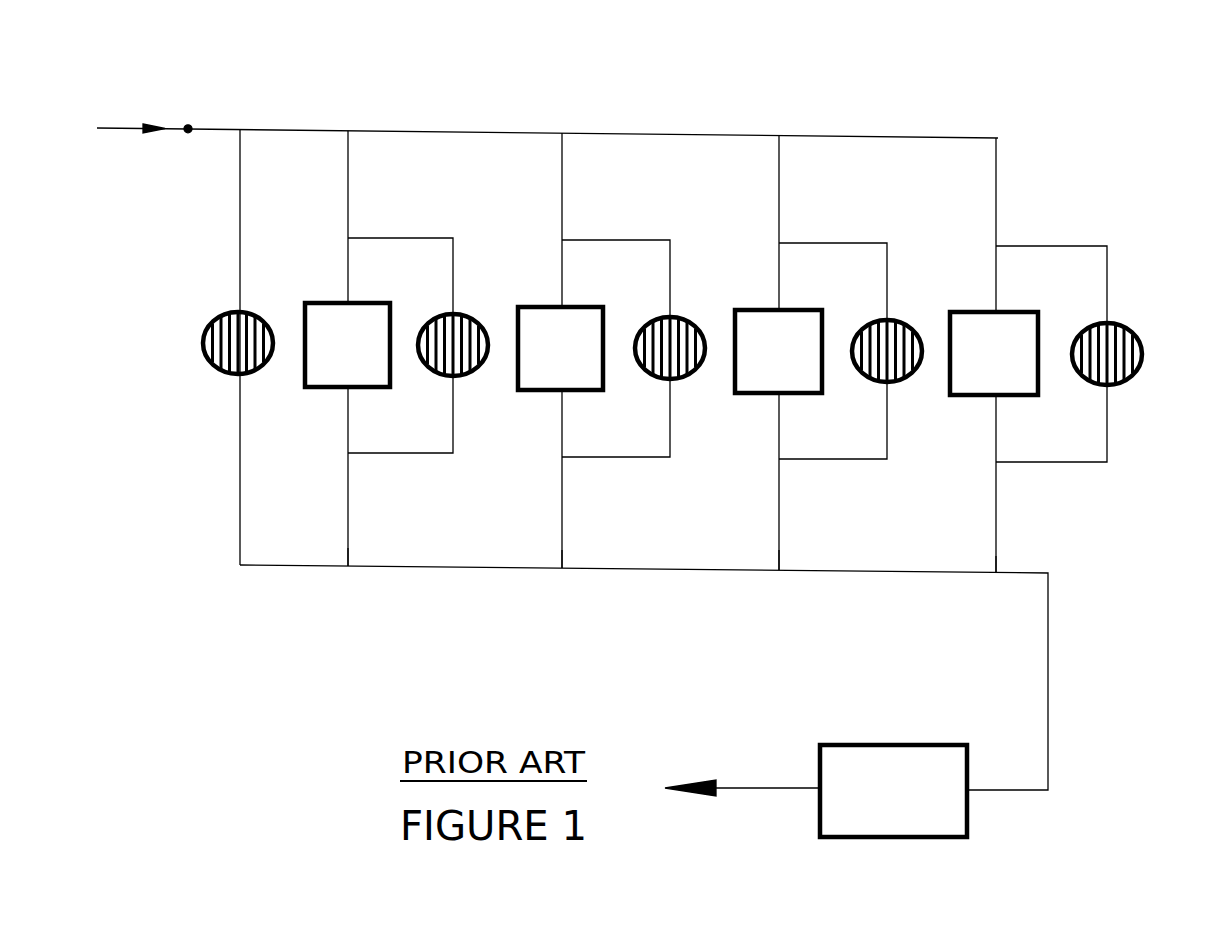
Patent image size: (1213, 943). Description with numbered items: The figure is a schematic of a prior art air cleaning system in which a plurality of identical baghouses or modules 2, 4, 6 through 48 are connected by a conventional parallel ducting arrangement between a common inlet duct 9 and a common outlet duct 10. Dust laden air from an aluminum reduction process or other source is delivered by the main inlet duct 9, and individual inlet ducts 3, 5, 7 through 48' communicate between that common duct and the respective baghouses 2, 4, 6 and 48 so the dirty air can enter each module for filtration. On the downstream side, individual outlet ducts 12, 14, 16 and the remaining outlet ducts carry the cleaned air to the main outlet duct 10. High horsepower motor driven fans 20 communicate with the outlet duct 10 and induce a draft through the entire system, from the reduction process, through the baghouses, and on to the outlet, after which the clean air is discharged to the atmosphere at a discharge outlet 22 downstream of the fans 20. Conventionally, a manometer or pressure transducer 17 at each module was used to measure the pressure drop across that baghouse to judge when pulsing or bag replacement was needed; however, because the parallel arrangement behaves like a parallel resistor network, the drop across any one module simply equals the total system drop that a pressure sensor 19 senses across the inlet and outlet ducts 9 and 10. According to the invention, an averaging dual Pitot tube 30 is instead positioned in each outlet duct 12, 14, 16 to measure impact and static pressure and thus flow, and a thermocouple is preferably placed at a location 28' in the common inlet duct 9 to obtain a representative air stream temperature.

The thermocouple location 28' is at (188, 77).
The common inlet duct 9 is at (868, 137).
The pressure sensor 19 is at (206, 324).
The common outlet duct 10 is at (680, 572).
The individual inlet duct 3 is at (348, 238).
The individual inlet duct 5 is at (562, 240).
The individual inlet duct 7 is at (779, 243).
The individual inlet duct 48' is at (1041, 205).
The baghouse 2 is at (347, 345).
The baghouse 4 is at (560, 348).
The baghouse 6 is at (778, 351).
The baghouse 48 is at (994, 353).
The pressure transducer 17 is at (465, 320).
The averaging dual Pitot tube 30 is at (348, 428).
The individual outlet duct 12 is at (348, 548).
The individual outlet duct 14 is at (562, 550).
The individual outlet duct 16 is at (779, 550).
The fans 20 is at (893, 791).
The discharge outlet 22 is at (740, 788).